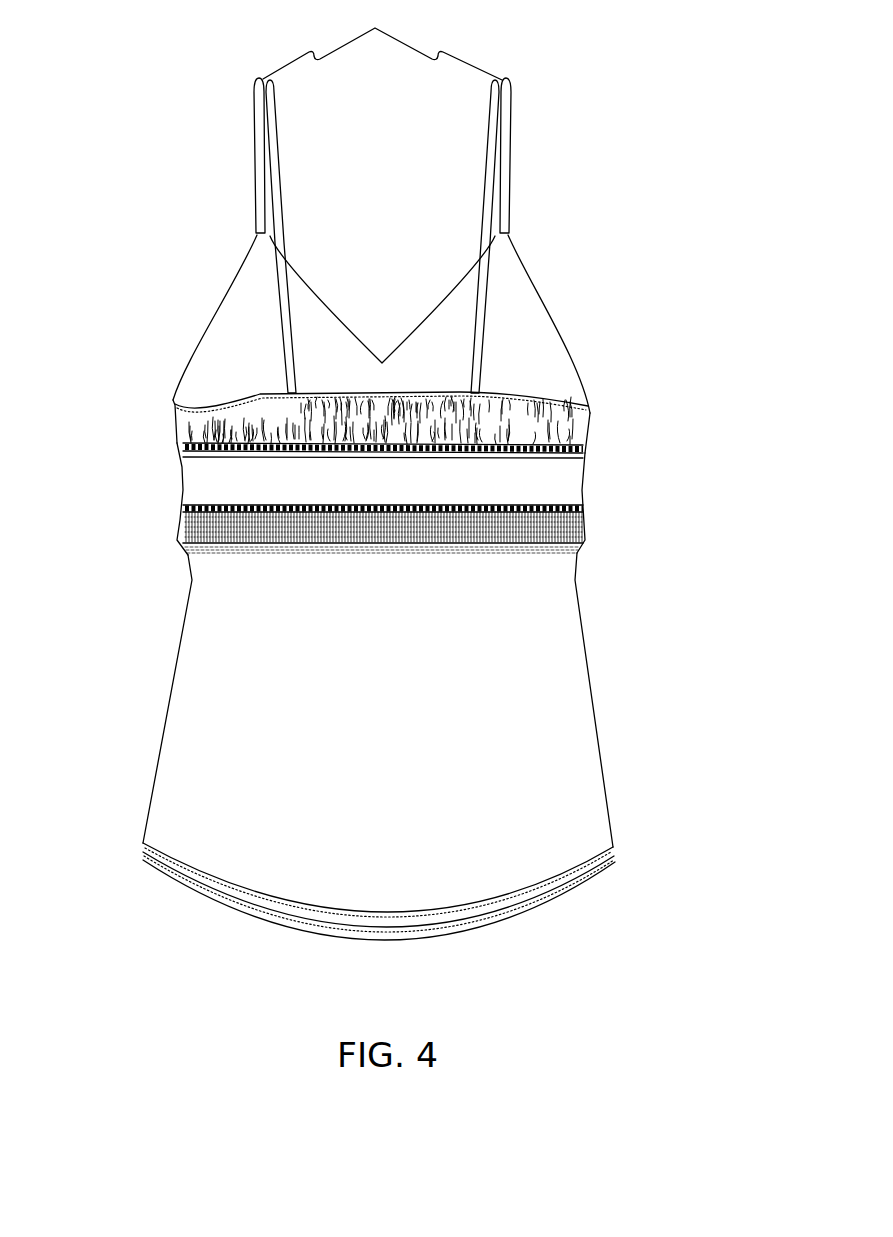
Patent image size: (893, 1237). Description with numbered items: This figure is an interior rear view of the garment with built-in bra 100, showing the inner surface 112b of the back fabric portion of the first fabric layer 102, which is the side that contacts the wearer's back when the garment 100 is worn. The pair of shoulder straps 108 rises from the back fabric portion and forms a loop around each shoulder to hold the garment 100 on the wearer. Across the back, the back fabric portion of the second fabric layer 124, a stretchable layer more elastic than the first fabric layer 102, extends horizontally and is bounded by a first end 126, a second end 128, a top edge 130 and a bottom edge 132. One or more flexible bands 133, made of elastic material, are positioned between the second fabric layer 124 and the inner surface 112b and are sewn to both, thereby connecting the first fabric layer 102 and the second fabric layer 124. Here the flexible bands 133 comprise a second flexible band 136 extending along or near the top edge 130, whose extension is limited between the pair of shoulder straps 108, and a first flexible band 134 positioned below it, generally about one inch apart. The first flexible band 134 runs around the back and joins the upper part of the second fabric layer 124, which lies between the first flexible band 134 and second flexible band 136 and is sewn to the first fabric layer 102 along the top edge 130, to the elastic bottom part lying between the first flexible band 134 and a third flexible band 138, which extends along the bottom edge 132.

The garment with built-in bra 100 is at (685, 985).
The first fabric layer 102 is at (562, 327).
The pair of shoulder straps 108 is at (382, 198).
The inner surface of back fabric portion 112b is at (415, 755).
The second fabric layer 124 is at (166, 462).
The first end 126 is at (178, 488).
The second end 128 is at (583, 488).
The top edge 130 is at (543, 402).
The bottom edge 132 is at (542, 512).
The flexible bands 133 is at (603, 412).
The first flexible band 134 is at (303, 445).
The second flexible band 136 is at (347, 393).
The third flexible band 138 is at (260, 509).